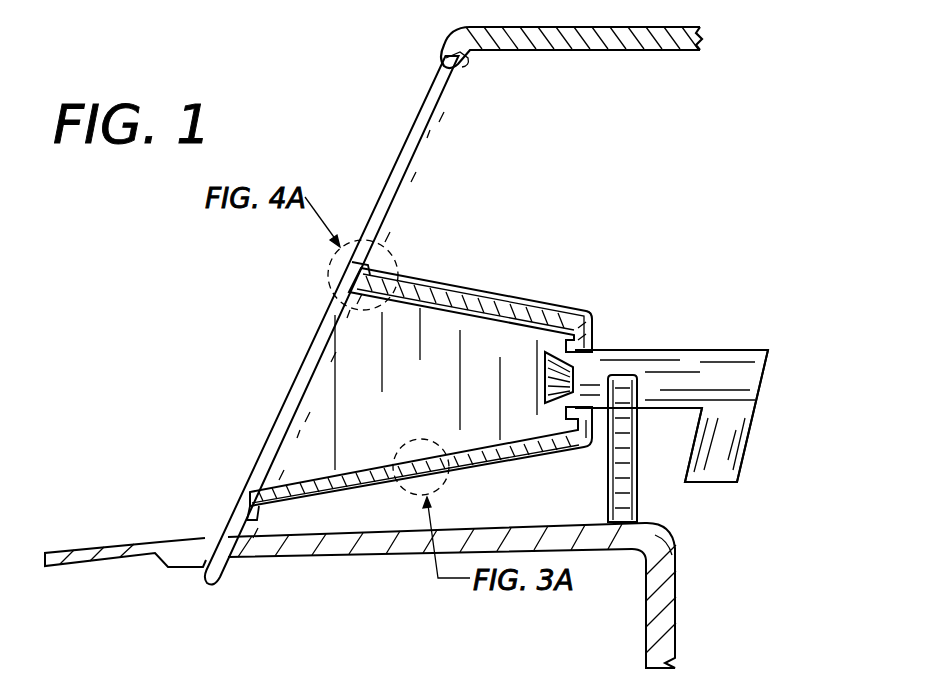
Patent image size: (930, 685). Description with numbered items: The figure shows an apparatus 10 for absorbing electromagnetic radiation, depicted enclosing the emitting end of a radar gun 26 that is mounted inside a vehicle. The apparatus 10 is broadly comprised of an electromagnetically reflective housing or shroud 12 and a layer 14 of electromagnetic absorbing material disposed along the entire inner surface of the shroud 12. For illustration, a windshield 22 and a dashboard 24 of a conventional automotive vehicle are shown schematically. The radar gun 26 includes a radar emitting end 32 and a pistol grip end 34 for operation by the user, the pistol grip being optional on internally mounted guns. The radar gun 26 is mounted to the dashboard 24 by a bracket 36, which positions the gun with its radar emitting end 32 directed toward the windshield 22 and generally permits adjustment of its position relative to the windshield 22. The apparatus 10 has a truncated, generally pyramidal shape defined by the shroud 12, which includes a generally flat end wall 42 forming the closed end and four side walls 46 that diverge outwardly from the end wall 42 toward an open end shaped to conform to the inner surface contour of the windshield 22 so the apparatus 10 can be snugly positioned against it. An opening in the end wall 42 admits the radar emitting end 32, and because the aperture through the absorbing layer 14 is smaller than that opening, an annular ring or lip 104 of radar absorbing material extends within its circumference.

The apparatus 10 is at (592, 282).
The housing or shroud 12 is at (490, 292).
The layer of electromagnetic absorbing material 14 is at (446, 306).
The windshield 22 is at (400, 152).
The dashboard 24 is at (350, 548).
The radar gun 26 is at (703, 373).
The radar emitting end 32 is at (598, 360).
The pistol grip end 34 is at (720, 460).
The bracket 36 is at (637, 468).
The end wall 42 is at (600, 478).
The side walls 46 is at (425, 276).
The annular ring or lip 104 is at (565, 338).